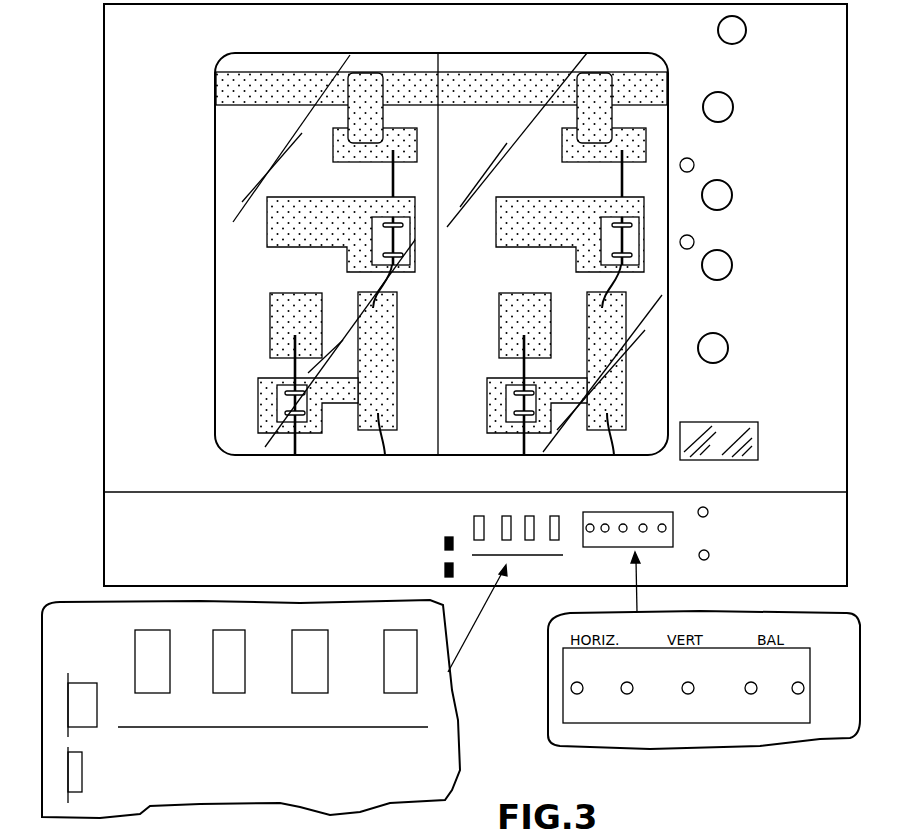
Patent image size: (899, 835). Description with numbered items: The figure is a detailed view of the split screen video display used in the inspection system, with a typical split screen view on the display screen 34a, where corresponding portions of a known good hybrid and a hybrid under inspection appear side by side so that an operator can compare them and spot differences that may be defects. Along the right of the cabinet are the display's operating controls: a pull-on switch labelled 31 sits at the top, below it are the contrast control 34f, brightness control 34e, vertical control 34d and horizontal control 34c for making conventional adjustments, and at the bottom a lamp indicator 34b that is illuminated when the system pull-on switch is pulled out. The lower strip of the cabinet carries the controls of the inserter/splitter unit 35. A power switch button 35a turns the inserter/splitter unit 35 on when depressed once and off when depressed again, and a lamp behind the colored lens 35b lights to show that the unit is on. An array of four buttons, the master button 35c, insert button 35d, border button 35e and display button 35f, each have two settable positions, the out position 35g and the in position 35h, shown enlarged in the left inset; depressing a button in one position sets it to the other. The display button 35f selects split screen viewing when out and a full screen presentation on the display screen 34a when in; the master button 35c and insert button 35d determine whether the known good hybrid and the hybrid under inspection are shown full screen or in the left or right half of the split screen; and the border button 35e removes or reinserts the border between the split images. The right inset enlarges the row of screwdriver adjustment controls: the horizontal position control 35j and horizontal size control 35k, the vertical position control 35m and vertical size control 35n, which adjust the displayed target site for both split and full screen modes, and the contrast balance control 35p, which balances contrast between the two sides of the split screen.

The pull-on power switch 31 is at (718, 30).
The display screen 34a is at (303, 60).
The lamp indicator 34b is at (758, 422).
The horizontal control 34c is at (727, 341).
The vertical control 34d is at (731, 258).
The brightness control 34e is at (731, 190).
The contrast control 34f is at (732, 98).
The inserter/splitter unit 35 is at (234, 531).
The power switch button 35a is at (708, 508).
The colored lens 35b is at (708, 560).
The master button 35c is at (475, 525).
The insert button 35d is at (506, 516).
The border button 35e is at (530, 516).
The display button 35f is at (555, 516).
The out position 35g is at (445, 543).
The in position 35h is at (445, 570).
The horizontal position control 35j is at (590, 532).
The horizontal size control 35k is at (612, 512).
The vertical position control 35m is at (623, 524).
The vertical size control 35n is at (645, 524).
The contrast balance control 35p is at (662, 532).